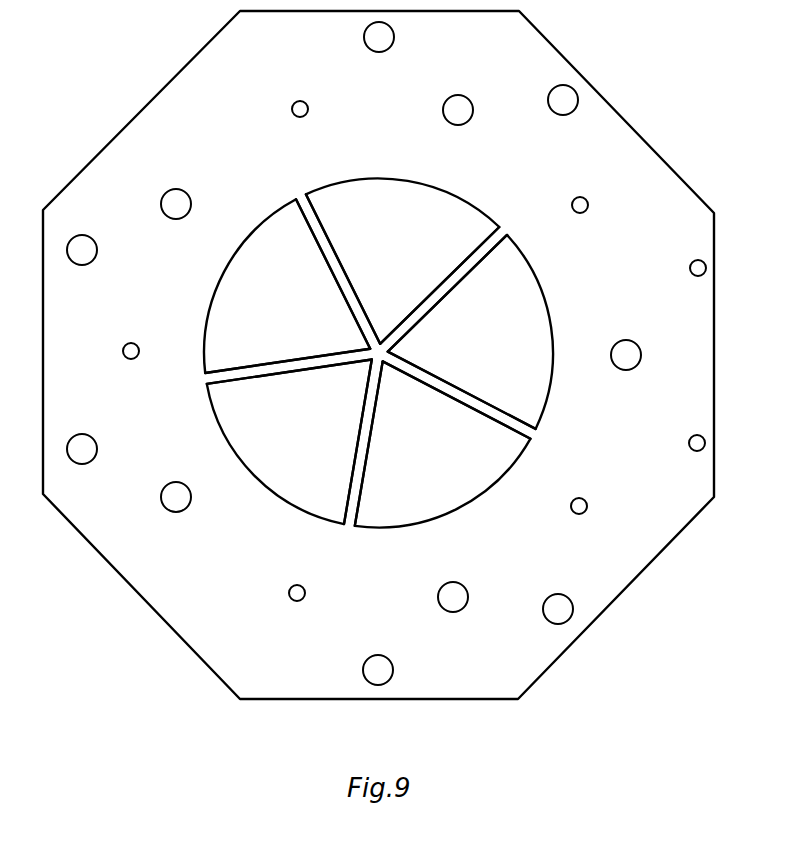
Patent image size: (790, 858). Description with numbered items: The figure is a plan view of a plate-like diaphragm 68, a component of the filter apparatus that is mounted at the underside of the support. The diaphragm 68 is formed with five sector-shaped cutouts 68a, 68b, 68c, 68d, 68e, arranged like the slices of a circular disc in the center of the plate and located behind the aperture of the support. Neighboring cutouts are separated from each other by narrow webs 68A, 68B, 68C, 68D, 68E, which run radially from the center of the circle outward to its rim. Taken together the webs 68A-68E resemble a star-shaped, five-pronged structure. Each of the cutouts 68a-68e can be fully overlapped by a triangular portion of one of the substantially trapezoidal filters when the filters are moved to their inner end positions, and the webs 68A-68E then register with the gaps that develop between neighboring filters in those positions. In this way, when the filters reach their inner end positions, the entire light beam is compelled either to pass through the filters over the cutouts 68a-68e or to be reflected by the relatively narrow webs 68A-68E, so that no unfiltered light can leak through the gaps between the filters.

The diaphragm 68 is at (637, 155).
The sector-shaped cutout 68a is at (452, 268).
The sector-shaped cutout 68b is at (550, 349).
The sector-shaped cutout 68c is at (468, 505).
The sector-shaped cutout 68d is at (263, 483).
The sector-shaped cutout 68e is at (207, 318).
The web 68A is at (428, 305).
The web 68B is at (425, 381).
The web 68C is at (354, 500).
The web 68D is at (300, 365).
The web 68E is at (340, 285).